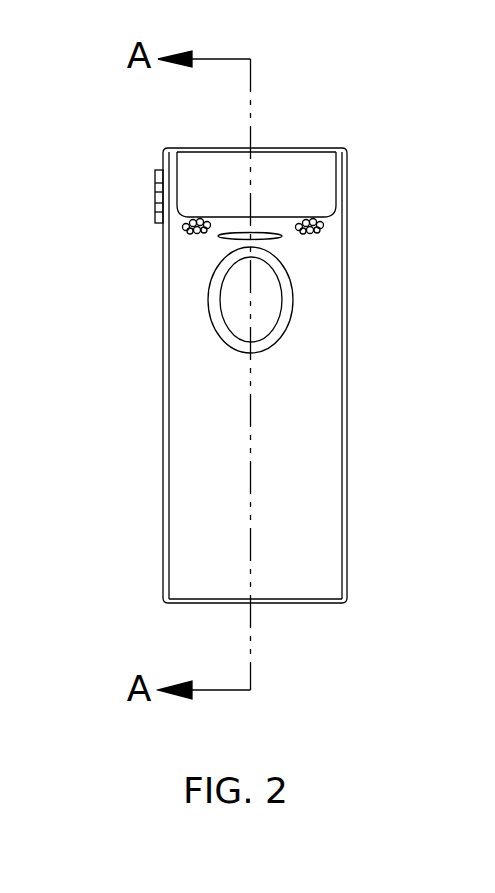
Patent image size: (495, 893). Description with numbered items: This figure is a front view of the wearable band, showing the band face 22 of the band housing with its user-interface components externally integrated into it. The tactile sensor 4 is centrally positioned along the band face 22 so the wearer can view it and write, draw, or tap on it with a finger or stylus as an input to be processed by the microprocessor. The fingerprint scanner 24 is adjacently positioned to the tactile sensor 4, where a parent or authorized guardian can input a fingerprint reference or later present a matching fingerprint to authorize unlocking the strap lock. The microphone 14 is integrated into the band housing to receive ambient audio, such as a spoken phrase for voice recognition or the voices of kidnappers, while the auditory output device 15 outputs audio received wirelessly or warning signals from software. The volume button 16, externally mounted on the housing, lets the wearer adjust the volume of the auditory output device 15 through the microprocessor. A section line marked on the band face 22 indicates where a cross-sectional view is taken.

The tactile sensor 4 is at (296, 168).
The microphone 14 is at (235, 238).
The auditory output device 15 is at (325, 226).
The volume button 16 is at (157, 190).
The band face 22 is at (318, 412).
The fingerprint scanner 24 is at (275, 302).